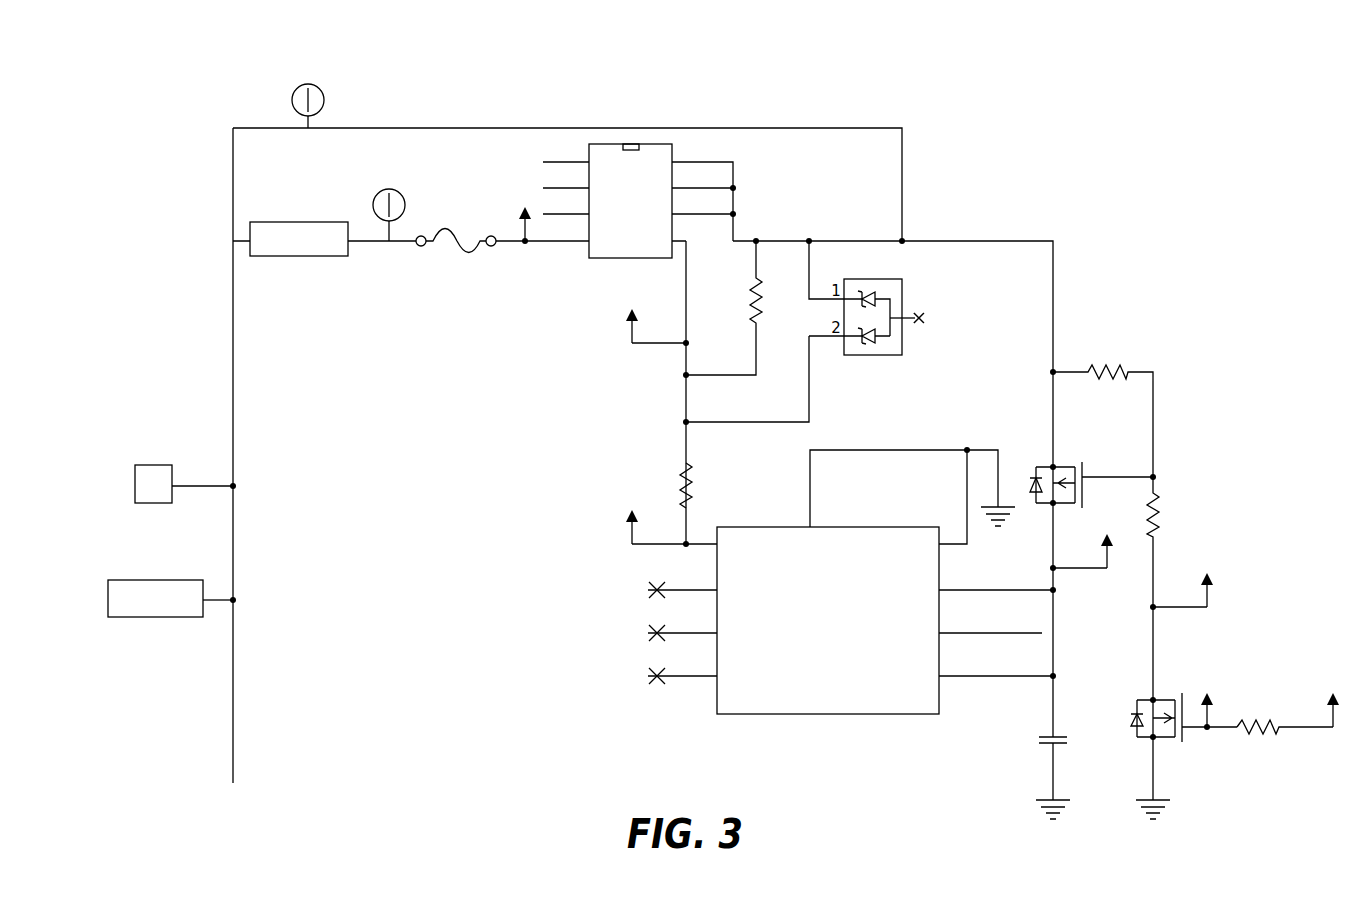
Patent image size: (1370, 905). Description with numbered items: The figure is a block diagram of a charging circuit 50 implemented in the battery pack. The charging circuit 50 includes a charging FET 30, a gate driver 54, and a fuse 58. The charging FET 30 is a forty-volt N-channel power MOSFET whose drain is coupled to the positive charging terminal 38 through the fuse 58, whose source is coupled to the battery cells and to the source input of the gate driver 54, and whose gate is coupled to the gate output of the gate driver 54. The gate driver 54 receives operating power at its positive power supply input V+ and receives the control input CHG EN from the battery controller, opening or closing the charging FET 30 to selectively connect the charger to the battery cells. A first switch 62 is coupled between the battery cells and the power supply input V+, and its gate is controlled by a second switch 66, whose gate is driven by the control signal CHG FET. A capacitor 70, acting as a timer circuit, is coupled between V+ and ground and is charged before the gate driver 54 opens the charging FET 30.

The charging FET 30 is at (628, 177).
The positive charging terminal 38 is at (250, 241).
The charging circuit 50 is at (480, 90).
The gate driver 54 is at (847, 700).
The fuse 58 is at (457, 248).
The first switch 62 is at (1035, 478).
The second switch 66 is at (1130, 712).
The capacitor 70 is at (1048, 751).